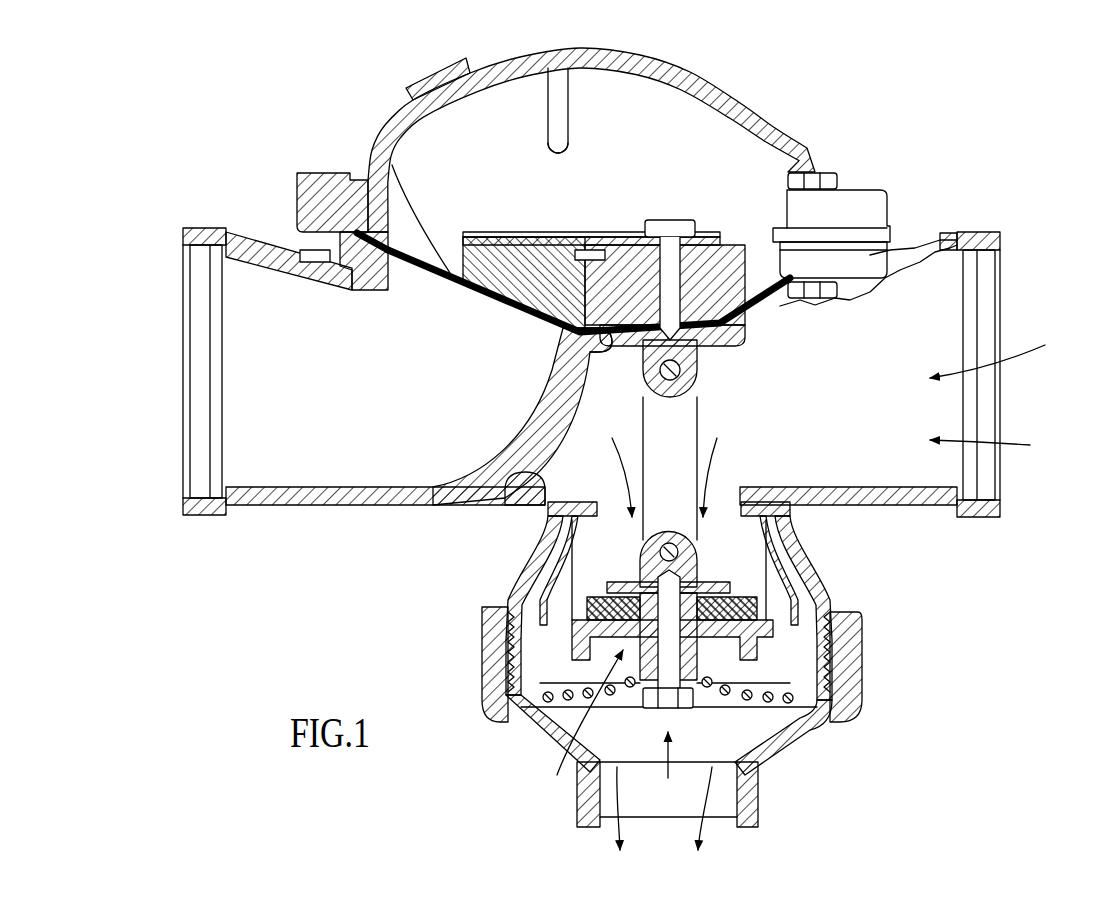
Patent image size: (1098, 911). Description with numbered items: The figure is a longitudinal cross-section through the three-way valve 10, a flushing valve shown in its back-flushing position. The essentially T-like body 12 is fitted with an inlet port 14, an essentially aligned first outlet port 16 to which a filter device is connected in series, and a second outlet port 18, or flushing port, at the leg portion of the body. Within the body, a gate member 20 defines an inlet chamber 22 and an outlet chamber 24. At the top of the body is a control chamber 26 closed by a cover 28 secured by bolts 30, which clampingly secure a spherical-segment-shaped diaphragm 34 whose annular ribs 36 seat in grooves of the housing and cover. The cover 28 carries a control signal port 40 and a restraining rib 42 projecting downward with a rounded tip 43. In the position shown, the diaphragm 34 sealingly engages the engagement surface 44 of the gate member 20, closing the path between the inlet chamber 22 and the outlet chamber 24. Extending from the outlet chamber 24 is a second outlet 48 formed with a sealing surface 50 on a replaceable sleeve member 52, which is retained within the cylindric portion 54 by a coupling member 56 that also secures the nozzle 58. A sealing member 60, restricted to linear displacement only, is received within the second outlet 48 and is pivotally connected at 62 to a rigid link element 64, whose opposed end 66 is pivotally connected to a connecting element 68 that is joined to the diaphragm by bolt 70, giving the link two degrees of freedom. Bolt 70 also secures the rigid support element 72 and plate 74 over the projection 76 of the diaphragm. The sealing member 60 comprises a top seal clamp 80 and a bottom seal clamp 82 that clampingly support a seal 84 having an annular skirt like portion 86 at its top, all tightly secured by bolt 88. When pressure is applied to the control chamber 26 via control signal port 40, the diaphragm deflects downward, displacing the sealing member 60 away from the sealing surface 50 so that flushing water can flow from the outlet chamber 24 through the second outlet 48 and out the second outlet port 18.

The 3-way valve 10 is at (935, 122).
The body 12 is at (323, 497).
The inlet port 14 is at (205, 300).
The first outlet port 16 is at (983, 300).
The second outlet port 18 is at (720, 810).
The gate member 20 is at (545, 410).
The inlet chamber 22 is at (250, 440).
The outlet chamber 24 is at (883, 463).
The control chamber 26 is at (685, 133).
The cover 28 is at (647, 62).
The bolts 30 is at (820, 180).
The diaphragm 34 is at (372, 165).
The annular ribs 36 is at (350, 220).
The control signal port 40 is at (443, 83).
The rib 42 is at (563, 107).
The rounded tip 43 is at (555, 165).
The engagement surface 44 is at (560, 363).
The second outlet 48 is at (615, 517).
The sealing surface 50 is at (815, 563).
The sleeve member 52 is at (832, 577).
The cylindric portion 54 is at (845, 598).
The coupling member 56 is at (840, 710).
The nozzle 58 is at (757, 788).
The sealing member 60 is at (573, 720).
The pivotal connection 62 is at (705, 535).
The link element 64 is at (680, 420).
The opposed end 66 is at (685, 365).
The connecting element 68 is at (717, 323).
The bolt 70 is at (668, 237).
The support element 72 is at (507, 237).
The plate 74 is at (540, 245).
The projection 76 is at (605, 245).
The top seal clamp 80 is at (600, 582).
The bottom seal clamp 82 is at (545, 718).
The seal 84 is at (488, 640).
The annular skirt like portion 86 is at (575, 620).
The bolt 88 is at (690, 703).